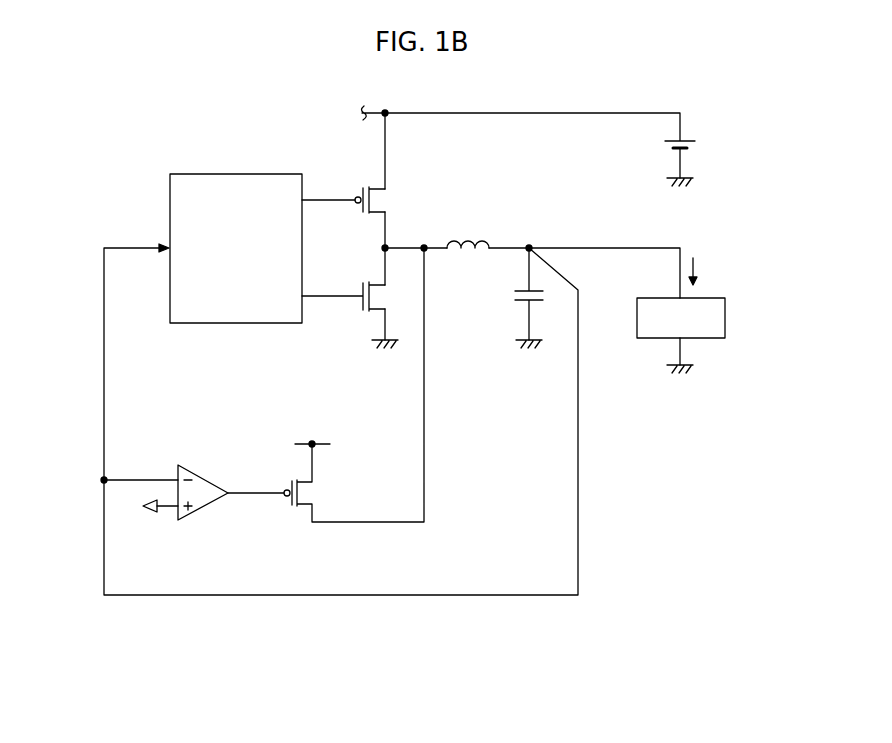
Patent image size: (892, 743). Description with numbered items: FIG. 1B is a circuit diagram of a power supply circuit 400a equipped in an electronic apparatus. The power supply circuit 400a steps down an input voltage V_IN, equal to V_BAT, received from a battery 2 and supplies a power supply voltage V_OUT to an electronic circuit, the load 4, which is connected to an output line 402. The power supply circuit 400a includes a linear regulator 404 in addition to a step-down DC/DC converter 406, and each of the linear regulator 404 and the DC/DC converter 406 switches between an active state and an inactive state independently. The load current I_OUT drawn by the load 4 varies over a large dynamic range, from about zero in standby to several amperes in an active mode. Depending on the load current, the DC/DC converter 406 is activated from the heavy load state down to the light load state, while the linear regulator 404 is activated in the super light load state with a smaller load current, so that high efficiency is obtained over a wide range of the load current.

The battery 2 is at (701, 148).
The load 4 is at (731, 320).
The output line 402 is at (679, 247).
The linear regulator 404 is at (280, 413).
The DC/DC converter 406 is at (560, 366).
The power supply circuit 400a is at (382, 374).